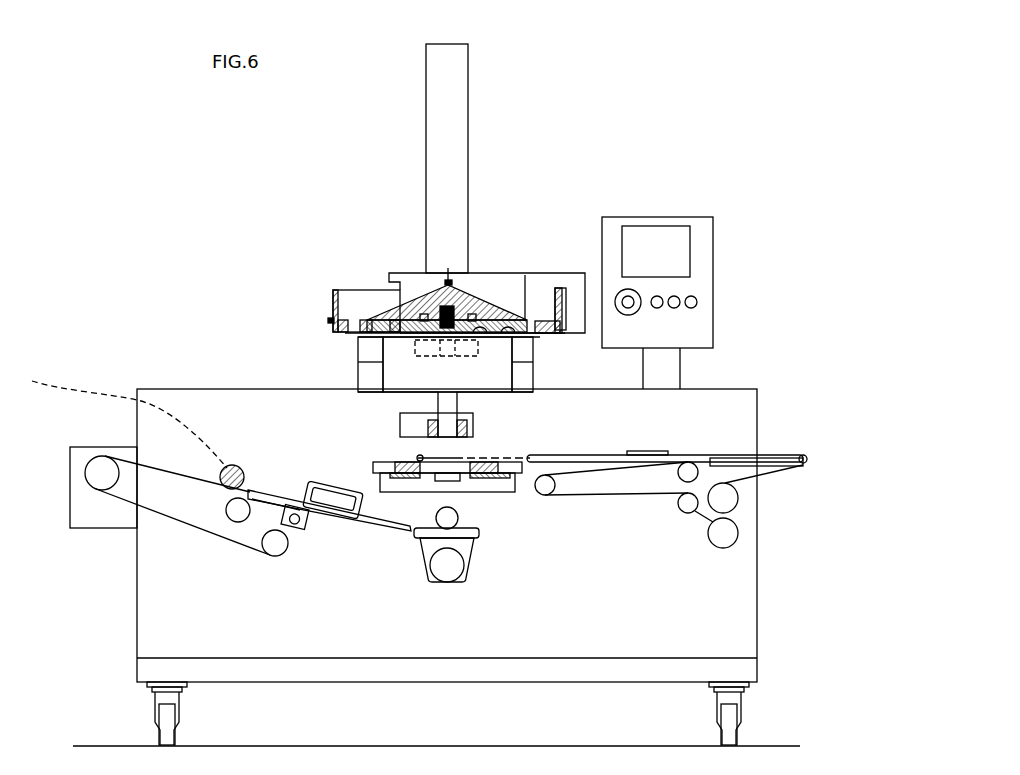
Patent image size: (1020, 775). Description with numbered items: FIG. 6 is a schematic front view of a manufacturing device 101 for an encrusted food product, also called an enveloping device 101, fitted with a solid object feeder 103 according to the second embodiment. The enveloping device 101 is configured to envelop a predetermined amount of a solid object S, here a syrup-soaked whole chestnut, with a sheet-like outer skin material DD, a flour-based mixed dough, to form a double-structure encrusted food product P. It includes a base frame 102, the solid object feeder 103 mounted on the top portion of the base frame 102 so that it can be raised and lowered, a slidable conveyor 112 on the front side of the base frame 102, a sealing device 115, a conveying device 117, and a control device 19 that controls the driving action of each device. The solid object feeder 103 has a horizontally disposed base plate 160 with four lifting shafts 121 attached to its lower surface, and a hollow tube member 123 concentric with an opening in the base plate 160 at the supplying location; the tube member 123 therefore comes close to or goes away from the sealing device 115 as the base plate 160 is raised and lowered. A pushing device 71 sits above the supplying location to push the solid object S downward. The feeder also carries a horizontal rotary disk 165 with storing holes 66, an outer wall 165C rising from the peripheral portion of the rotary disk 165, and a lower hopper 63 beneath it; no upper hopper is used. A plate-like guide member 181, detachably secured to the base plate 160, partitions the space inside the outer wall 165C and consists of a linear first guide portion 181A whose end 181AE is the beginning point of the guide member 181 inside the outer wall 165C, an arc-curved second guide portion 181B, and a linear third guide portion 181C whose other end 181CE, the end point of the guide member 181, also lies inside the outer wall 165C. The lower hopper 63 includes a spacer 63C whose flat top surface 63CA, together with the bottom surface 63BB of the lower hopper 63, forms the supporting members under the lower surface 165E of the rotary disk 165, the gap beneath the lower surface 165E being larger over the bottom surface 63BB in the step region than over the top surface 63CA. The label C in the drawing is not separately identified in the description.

The manufacturing device (enveloping device) 101 is at (803, 143).
The base frame 102 is at (733, 592).
The solid object feeder 103 is at (178, 109).
The pushing device 71 is at (481, 107).
The control device 19 is at (703, 282).
The guide member 181 is at (495, 256).
The first guide portion 181A is at (540, 283).
The one end of the first guide portion 181AE is at (553, 303).
The second guide portion 181B is at (505, 280).
The third guide portion 181C is at (417, 280).
The left wall end 181CE is at (382, 285).
The cone member C is at (472, 274).
The storing hole 66 is at (349, 290).
The rotary disk 165 is at (356, 307).
The outer wall 165C is at (333, 297).
The lower surface of the rotary disk 165E is at (547, 335).
The lower hopper 63 is at (332, 331).
The spacer 63C is at (535, 391).
The top surface of the spacer 63CA is at (508, 328).
The bottom surface of the lower hopper 63BB is at (480, 328).
The base plate 160 is at (358, 348).
The lifting shafts 121 is at (370, 368).
The tube member 123 is at (358, 388).
The outer skin material DD is at (221, 476).
The conveying device 117 is at (227, 552).
The encrusted food product P is at (247, 456).
The solid object S is at (123, 419).
The sealing device 115 is at (500, 527).
The slidable conveyor 112 is at (770, 488).